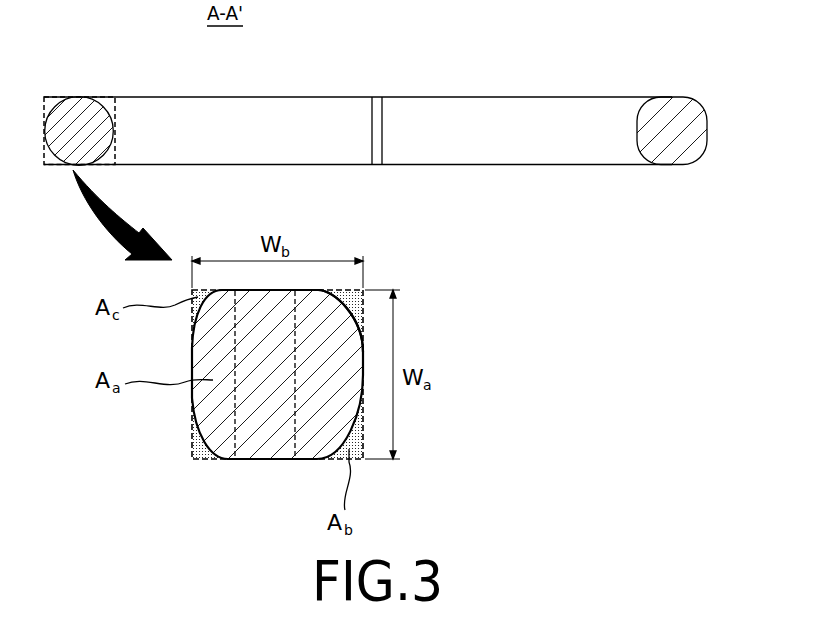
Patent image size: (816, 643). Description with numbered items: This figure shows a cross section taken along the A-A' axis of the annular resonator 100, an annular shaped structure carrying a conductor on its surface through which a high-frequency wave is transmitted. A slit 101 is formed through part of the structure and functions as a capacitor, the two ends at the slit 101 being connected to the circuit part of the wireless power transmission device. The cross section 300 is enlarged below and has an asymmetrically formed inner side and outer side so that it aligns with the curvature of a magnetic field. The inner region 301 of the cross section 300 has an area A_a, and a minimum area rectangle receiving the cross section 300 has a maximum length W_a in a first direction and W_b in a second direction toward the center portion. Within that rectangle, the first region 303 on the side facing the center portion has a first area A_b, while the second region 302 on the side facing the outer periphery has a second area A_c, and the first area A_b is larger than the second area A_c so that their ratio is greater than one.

The annular resonator 100 is at (537, 97).
The slit 101 is at (380, 97).
The cross section 300 is at (80, 114).
The inner region 301 is at (261, 447).
The second region 302 is at (196, 440).
The first region 303 is at (353, 297).